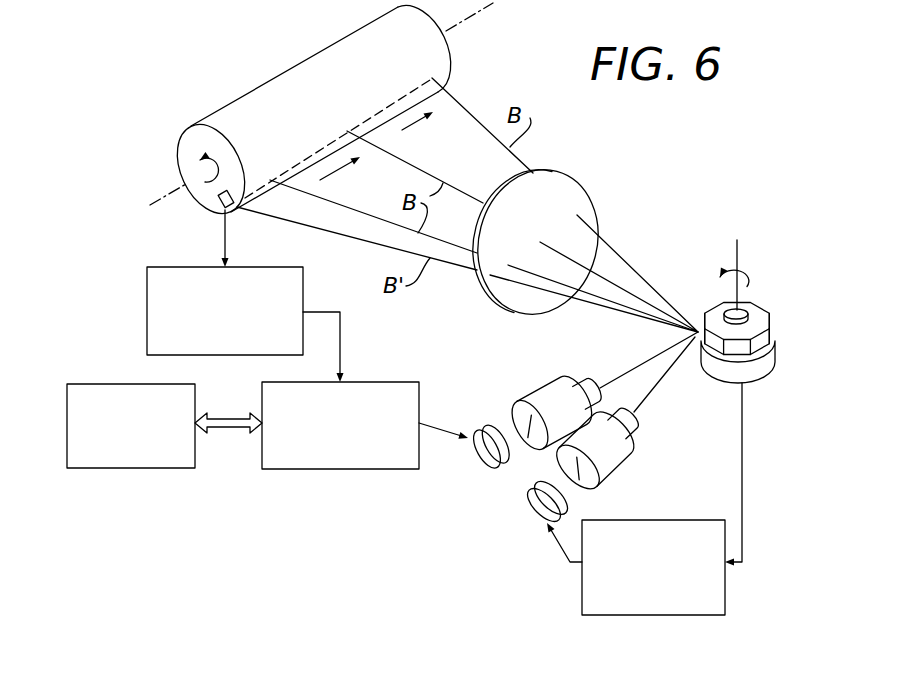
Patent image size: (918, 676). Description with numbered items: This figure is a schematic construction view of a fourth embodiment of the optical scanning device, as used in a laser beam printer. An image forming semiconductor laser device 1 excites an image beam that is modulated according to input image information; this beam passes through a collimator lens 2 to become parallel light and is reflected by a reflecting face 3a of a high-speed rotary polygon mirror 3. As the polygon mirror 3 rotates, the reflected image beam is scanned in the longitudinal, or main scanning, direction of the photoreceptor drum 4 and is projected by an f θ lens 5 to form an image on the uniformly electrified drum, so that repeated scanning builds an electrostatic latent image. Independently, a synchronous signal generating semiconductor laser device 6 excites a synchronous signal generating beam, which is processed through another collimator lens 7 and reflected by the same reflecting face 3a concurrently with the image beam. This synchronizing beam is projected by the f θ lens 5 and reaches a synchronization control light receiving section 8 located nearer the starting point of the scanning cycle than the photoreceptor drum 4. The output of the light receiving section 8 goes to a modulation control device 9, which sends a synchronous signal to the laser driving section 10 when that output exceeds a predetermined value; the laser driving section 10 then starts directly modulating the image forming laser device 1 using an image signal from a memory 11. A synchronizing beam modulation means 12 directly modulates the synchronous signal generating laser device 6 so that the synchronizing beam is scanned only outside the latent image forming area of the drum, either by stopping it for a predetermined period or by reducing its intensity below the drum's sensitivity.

The image forming semiconductor laser device 1 is at (480, 460).
The collimator lens 2 is at (541, 393).
The rotary polygon mirror 3 is at (755, 305).
The reflecting face 3a is at (727, 352).
The photoreceptor drum 4 is at (283, 75).
The f θ lens 5 is at (593, 190).
The synchronous signal generating semiconductor laser device 6 is at (530, 500).
The collimator lens 7 is at (620, 461).
The synchronization control light receiving section 8 is at (216, 206).
The modulation control device 9 is at (147, 294).
The laser driving section 10 is at (390, 382).
The memory 11 is at (105, 384).
The SOS beam modulation means 12 is at (582, 590).